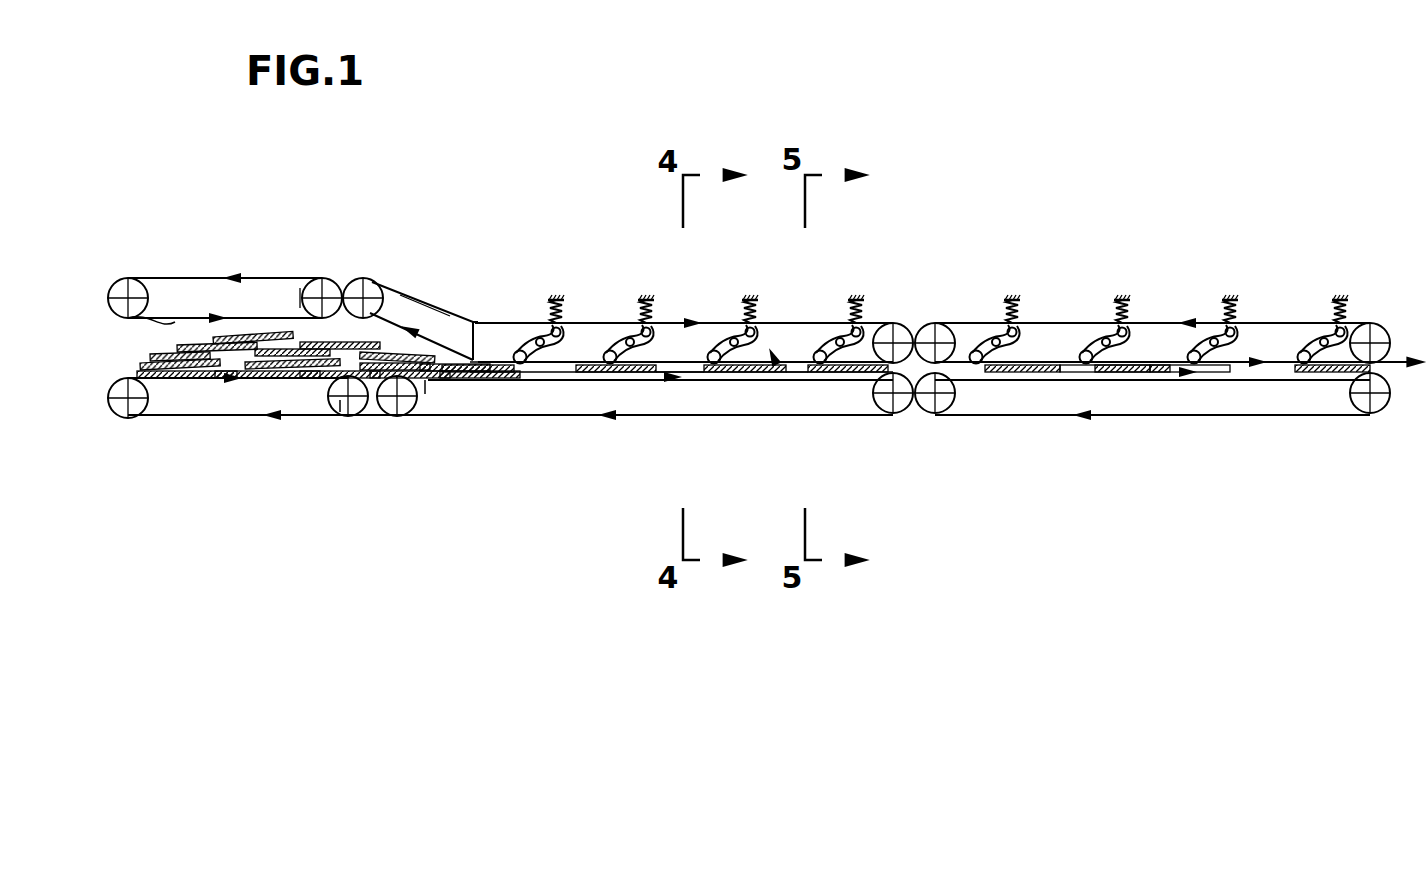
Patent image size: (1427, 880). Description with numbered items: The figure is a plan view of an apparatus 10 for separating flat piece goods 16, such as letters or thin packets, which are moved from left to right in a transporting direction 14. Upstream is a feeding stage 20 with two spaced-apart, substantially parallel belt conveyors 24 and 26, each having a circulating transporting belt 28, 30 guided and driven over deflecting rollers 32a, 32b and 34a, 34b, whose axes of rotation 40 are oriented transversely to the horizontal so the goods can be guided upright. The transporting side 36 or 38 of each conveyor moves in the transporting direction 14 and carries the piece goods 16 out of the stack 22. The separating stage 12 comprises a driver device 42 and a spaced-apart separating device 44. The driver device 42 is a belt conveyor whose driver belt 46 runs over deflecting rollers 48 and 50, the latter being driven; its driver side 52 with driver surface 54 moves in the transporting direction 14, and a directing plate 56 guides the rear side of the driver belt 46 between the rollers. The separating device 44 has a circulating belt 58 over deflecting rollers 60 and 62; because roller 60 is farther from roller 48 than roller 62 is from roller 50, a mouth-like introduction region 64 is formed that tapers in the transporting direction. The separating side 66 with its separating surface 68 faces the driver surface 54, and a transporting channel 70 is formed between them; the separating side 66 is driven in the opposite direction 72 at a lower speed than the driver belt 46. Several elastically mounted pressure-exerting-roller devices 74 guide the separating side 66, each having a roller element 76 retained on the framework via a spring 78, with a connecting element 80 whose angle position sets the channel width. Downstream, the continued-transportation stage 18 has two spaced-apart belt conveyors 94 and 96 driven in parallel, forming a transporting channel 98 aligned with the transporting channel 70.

The apparatus 10 is at (948, 255).
The separating stage 12 is at (728, 436).
The transporting direction 14 is at (1345, 413).
The flat piece goods 16 is at (472, 335).
The continued-transportation stage 18 is at (1128, 456).
The feeding stage 20 is at (252, 482).
The stack 22 is at (312, 418).
The belt conveyor 24 is at (172, 445).
The belt conveyor 26 is at (192, 262).
The transporting belt 28 is at (185, 418).
The transporting belt 30 is at (265, 278).
The deflecting roller 32a is at (128, 418).
The deflecting roller 32b is at (352, 418).
The deflecting roller 34a is at (126, 278).
The deflecting roller 34b is at (325, 278).
The transporting side 36 is at (268, 418).
The transporting side 38 is at (158, 322).
The axes of rotation 40 is at (344, 418).
The driver device 42 is at (616, 436).
The separating device 44 is at (612, 300).
The driver belt 46 is at (415, 418).
The deflecting roller 48 is at (404, 418).
The deflecting roller 50 is at (898, 418).
The driver side 52 is at (568, 380).
The driver surface 54 is at (572, 352).
The directing plate 56 is at (830, 380).
The belt 58 is at (820, 318).
The deflecting roller 60 is at (366, 278).
The deflecting roller 62 is at (893, 323).
The introduction region 64 is at (408, 300).
The separating side 66 is at (658, 380).
The separating surface 68 is at (800, 380).
The transporting channel 70 is at (522, 380).
The direction 72 is at (866, 382).
The pressure-exerting-roller devices 74 is at (735, 298).
The roller element 76 is at (700, 380).
The spring 78 is at (753, 318).
The connecting element 80 is at (750, 380).
The belt conveyor 94 is at (1254, 432).
The belt conveyor 96 is at (1182, 302).
The transporting channel 98 is at (1030, 380).